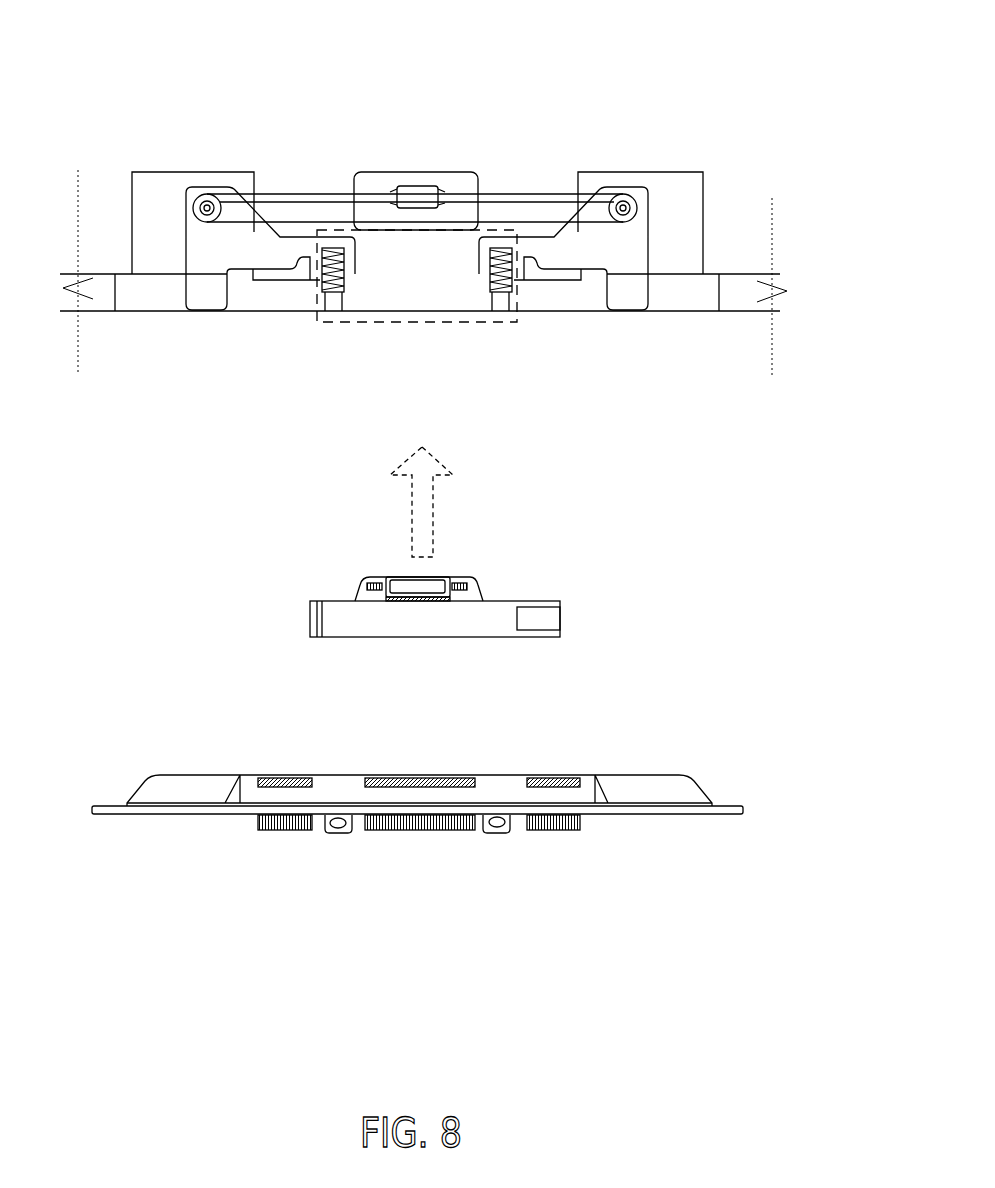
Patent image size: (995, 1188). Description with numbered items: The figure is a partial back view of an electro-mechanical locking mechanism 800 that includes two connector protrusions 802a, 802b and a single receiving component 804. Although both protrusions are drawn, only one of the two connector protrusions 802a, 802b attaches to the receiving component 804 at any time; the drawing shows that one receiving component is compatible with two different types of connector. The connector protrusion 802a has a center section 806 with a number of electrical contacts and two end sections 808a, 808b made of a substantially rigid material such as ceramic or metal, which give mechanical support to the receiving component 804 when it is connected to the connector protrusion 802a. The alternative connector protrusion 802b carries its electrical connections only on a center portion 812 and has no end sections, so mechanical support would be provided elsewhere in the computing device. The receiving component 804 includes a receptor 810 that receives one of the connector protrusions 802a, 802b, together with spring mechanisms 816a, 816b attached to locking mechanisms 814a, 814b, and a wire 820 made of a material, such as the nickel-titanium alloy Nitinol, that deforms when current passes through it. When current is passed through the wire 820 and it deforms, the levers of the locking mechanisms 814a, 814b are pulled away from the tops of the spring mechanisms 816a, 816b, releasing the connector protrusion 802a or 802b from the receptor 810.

The electro-mechanical locking mechanism 800 is at (165, 92).
The connector protrusion 802a is at (668, 856).
The connector protrusion 802b is at (640, 632).
The receiving component 804 is at (614, 422).
The center section 806 is at (340, 774).
The end section 808a is at (170, 774).
The end section 808b is at (665, 774).
The receptor 810 is at (393, 322).
The center portion 812 is at (363, 578).
The locking mechanism 814a is at (186, 311).
The locking mechanism 814b is at (647, 247).
The spring mechanism 816a is at (320, 300).
The spring mechanism 816b is at (513, 295).
The wire 820 is at (512, 195).